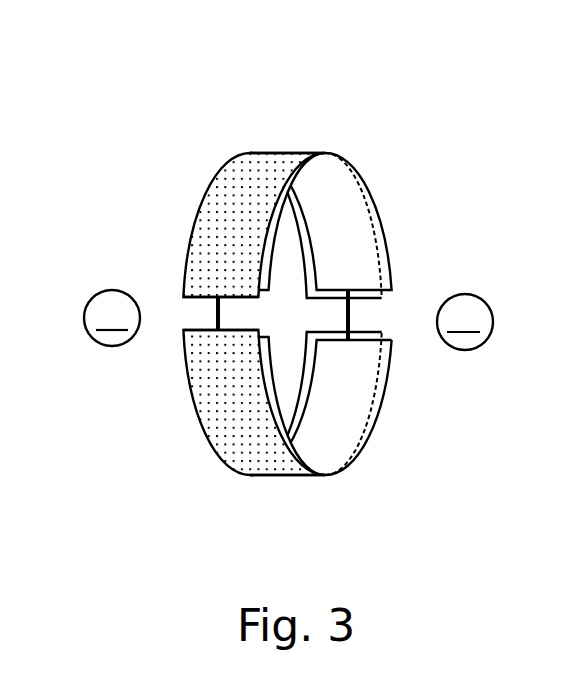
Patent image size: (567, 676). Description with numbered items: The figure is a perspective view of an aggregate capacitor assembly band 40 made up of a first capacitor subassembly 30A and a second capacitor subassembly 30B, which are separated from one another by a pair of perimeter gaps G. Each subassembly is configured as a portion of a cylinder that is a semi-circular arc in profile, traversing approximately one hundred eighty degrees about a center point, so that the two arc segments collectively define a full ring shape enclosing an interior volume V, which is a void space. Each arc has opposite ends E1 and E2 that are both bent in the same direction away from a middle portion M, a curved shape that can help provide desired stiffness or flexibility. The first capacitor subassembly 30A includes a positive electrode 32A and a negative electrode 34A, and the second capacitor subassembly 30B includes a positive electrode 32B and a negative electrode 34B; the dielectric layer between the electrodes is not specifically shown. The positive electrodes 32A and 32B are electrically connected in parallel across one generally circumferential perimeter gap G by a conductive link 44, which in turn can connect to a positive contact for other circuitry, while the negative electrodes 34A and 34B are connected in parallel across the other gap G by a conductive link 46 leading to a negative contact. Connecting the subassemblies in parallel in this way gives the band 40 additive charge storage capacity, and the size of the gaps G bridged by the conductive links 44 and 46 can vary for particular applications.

The aggregate capacitor assembly band 40 is at (163, 136).
The first capacitor subassembly 30A is at (218, 158).
The second capacitor subassembly 30B is at (209, 425).
The positive electrode 32A is at (215, 220).
The positive electrode 32B is at (217, 383).
The negative electrode 34A is at (370, 193).
The negative electrode 34B is at (378, 407).
The conductive link 44 is at (220, 302).
The conductive link 46 is at (353, 313).
The middle portion M is at (323, 137).
The end E1 is at (180, 277).
The end E2 is at (393, 270).
The perimeter gap G is at (325, 312).
The interior volume V is at (293, 393).